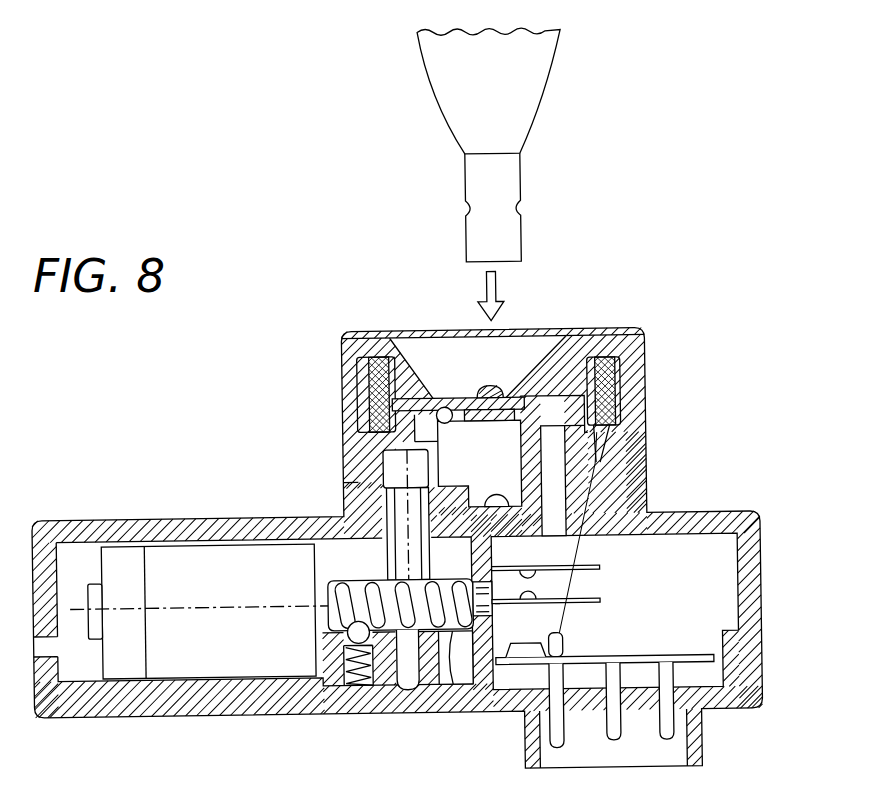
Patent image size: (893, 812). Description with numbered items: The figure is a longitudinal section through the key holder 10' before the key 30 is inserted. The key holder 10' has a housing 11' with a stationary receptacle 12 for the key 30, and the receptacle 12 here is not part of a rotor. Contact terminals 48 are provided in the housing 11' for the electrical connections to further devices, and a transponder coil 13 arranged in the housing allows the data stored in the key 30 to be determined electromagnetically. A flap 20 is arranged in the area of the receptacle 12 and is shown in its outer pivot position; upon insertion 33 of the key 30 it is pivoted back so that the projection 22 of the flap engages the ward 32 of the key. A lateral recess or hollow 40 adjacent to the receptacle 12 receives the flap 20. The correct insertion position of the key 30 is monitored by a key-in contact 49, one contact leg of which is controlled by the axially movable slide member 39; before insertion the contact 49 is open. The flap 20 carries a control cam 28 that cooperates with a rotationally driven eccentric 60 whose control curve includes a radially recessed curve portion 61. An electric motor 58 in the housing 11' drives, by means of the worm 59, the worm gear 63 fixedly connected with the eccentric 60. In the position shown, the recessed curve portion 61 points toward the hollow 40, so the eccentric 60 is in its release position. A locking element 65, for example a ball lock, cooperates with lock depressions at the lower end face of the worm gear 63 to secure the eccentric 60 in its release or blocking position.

The key holder 10' is at (532, 396).
The housing 11' is at (418, 550).
The receptacle 12 is at (484, 466).
The transponder coil 13 is at (606, 385).
The flap 20 is at (522, 392).
The projection 22 is at (493, 395).
The control cam 28 is at (455, 400).
The key 30 is at (579, 51).
The ward 32 is at (459, 200).
The insertion 33 is at (489, 291).
The slide member 39 is at (500, 510).
The recess 40 is at (362, 380).
The contact terminals 48 is at (614, 740).
The key-in contact 49 is at (600, 625).
The electric motor 58 is at (184, 594).
The worm 59 is at (455, 705).
The eccentric 60 is at (360, 477).
The recessed curve portion 61 is at (430, 478).
The worm gear 63 is at (391, 705).
The locking element 65 is at (357, 702).